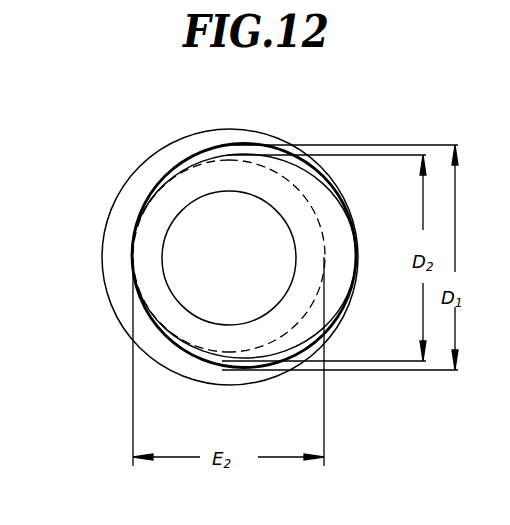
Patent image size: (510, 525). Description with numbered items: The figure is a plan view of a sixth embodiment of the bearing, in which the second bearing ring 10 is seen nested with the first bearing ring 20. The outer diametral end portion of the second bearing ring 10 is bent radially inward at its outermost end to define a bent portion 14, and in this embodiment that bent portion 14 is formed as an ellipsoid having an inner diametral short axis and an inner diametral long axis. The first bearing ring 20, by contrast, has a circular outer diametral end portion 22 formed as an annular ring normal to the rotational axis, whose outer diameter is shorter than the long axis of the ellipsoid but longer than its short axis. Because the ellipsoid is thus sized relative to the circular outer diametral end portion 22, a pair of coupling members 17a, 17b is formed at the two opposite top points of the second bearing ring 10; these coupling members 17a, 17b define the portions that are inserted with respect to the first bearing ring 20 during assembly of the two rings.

The second bearing ring 10 is at (333, 198).
The bent portion 14 is at (192, 150).
The coupling member 17a is at (129, 255).
The coupling member 17b is at (330, 250).
The first bearing ring 20 is at (305, 283).
The outer diametral end portion 22 is at (223, 152).